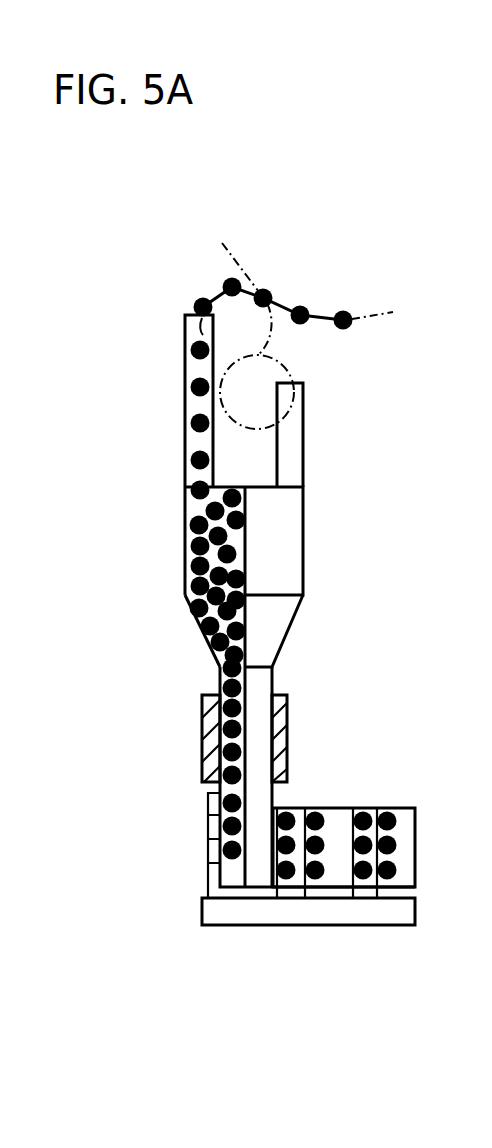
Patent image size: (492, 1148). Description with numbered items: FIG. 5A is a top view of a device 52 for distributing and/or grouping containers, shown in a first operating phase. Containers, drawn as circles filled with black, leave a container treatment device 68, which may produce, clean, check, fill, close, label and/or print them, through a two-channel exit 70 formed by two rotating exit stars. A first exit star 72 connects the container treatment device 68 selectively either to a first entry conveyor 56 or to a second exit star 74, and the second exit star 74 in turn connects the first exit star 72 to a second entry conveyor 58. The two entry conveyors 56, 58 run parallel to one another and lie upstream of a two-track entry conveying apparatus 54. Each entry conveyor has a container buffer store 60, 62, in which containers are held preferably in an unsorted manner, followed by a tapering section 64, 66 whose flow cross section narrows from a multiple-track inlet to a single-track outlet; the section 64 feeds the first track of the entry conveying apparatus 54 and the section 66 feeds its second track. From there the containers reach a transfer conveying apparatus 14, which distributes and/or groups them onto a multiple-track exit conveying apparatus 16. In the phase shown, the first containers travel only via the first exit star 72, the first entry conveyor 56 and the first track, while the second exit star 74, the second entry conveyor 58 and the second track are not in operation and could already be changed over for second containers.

The device 52 is at (308, 156).
The transfer conveying apparatus 14 is at (180, 901).
The multiple-track exit conveying apparatus 16 is at (376, 799).
The entry conveying apparatus 54 is at (176, 768).
The first entry conveyor 56 is at (171, 462).
The second entry conveyor 58 is at (340, 523).
The container buffer store 60 is at (186, 560).
The container buffer store 62 is at (303, 543).
The tapering section 64 is at (201, 641).
The tapering section 66 is at (290, 630).
The container treatment device 68 is at (320, 321).
The two-channel exit 70 is at (320, 358).
The first exit star 72 is at (212, 296).
The second exit star 74 is at (297, 378).